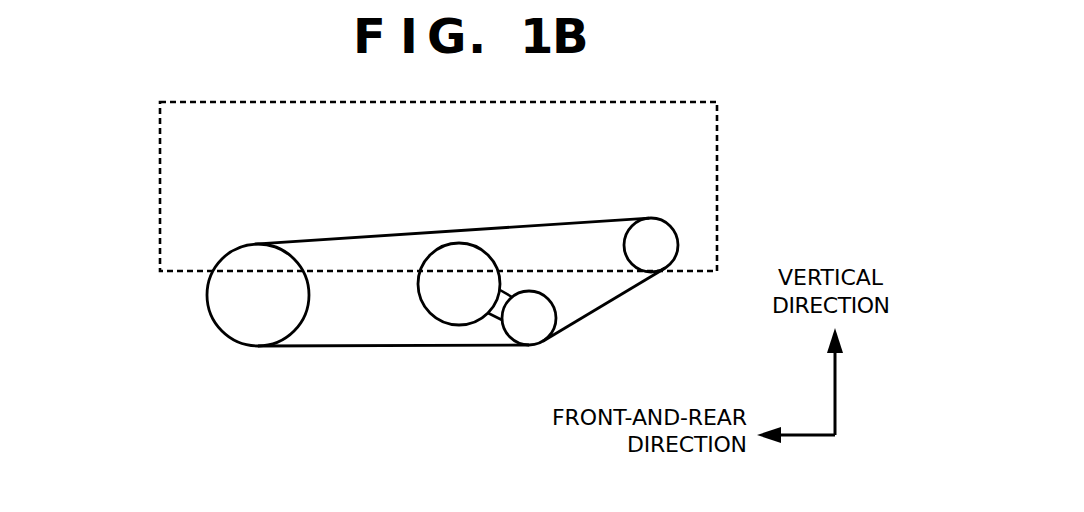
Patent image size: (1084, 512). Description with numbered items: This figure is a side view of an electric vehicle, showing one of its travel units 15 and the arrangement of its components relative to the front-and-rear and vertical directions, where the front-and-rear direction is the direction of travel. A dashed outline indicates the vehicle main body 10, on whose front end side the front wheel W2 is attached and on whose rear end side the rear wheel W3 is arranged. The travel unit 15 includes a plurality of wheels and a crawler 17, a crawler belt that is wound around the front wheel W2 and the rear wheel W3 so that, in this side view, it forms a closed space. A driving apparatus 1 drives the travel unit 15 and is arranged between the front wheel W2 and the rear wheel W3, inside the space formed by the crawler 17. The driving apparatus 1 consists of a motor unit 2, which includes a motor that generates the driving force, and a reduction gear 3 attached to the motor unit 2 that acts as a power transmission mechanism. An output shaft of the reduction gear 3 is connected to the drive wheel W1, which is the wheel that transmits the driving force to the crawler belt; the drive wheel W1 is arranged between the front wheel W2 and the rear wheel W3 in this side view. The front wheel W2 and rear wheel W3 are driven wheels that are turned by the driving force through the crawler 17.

The vehicle main body 10 is at (140, 191).
The travel unit 15 is at (360, 222).
The crawler 17 is at (352, 348).
The driving apparatus 1 is at (462, 338).
The motor unit 2 is at (460, 254).
The reduction gear 3 is at (507, 290).
The drive wheel W1 is at (532, 331).
The front wheel W2 is at (258, 332).
The rear wheel W3 is at (657, 263).